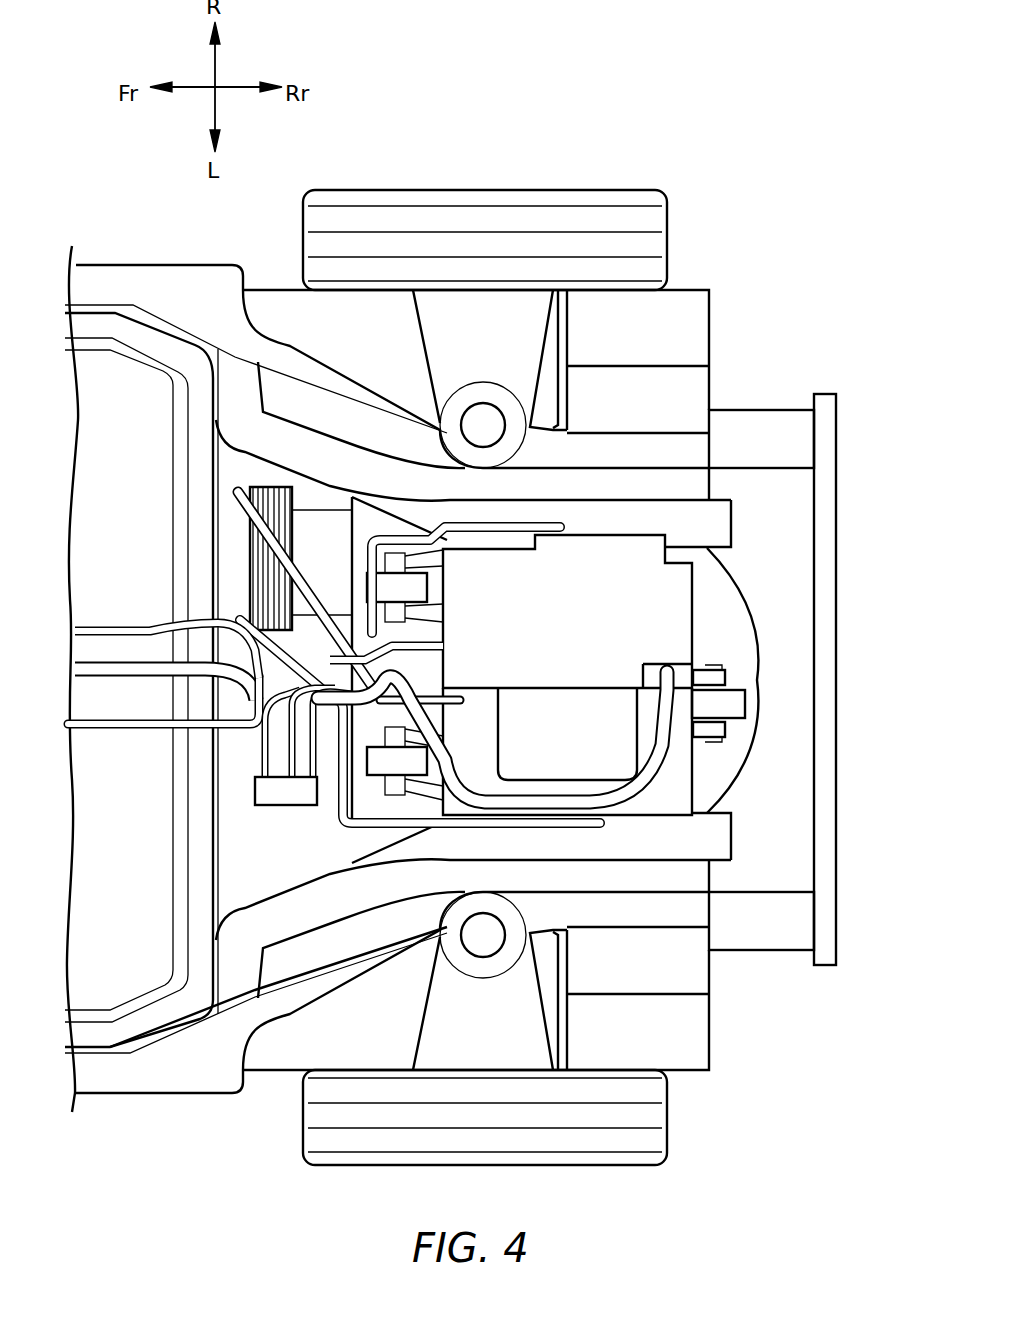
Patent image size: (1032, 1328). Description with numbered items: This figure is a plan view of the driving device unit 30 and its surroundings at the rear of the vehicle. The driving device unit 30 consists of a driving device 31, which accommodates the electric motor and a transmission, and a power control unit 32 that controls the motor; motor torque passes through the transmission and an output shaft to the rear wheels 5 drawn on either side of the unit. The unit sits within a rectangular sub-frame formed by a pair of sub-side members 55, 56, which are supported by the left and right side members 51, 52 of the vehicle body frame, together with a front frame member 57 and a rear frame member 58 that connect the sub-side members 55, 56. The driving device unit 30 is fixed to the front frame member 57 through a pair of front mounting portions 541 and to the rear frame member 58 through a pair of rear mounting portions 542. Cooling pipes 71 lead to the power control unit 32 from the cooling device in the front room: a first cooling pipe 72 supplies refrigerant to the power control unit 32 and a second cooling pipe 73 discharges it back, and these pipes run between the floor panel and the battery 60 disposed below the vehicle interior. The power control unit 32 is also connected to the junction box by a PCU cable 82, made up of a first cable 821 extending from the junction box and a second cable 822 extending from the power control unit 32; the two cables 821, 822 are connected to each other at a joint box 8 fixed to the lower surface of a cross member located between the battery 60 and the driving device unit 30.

The rear wheels 5 is at (670, 250).
The joint box 8 is at (282, 808).
The driving device unit 30 is at (688, 675).
The driving device 31 is at (692, 765).
The power control unit 32 is at (692, 630).
The side member 51 is at (160, 265).
The side member 52 is at (102, 1096).
The sub-side member 55 is at (640, 498).
The sub-side member 56 is at (690, 862).
The front frame member 57 is at (350, 833).
The rear frame member 58 is at (747, 592).
The battery 60 is at (150, 1032).
The cooling pipes 71 is at (163, 616).
The first cooling pipe 72 is at (148, 716).
The second cooling pipe 73 is at (107, 624).
The PCU cable 82 is at (757, 810).
The front mounting portions 541 is at (372, 588).
The rear mounting portions 542 is at (746, 704).
The first cable 821 is at (108, 684).
The second cable 822 is at (665, 778).